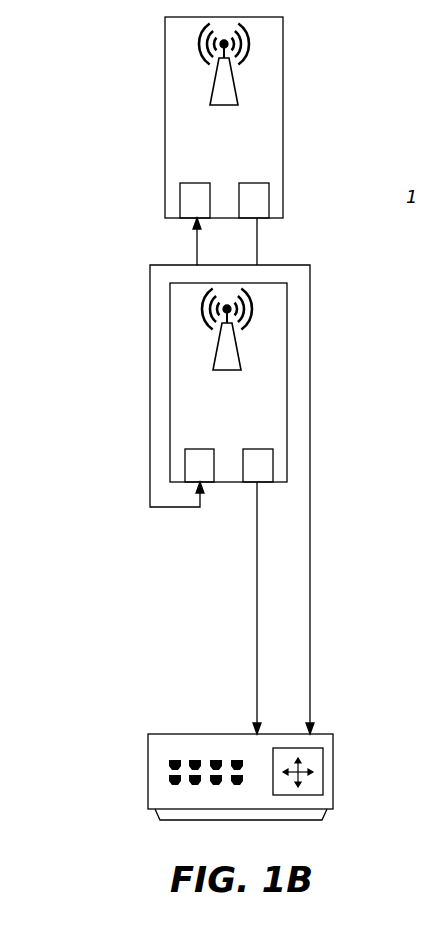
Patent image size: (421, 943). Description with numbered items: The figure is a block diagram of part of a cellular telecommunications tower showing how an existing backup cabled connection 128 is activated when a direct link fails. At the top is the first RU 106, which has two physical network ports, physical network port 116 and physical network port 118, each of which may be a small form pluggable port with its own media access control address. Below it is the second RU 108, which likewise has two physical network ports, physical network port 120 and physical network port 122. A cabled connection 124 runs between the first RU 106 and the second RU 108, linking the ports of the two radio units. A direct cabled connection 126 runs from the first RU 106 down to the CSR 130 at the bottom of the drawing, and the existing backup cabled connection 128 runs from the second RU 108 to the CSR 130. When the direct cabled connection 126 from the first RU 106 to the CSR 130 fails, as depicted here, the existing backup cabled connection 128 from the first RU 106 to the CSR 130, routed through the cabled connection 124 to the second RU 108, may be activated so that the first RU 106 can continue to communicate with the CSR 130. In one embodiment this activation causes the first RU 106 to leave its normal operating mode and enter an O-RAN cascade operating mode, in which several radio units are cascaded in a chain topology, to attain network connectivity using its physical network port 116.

The first RU 106 is at (210, 152).
The second RU 108 is at (215, 414).
The physical network port 116 is at (195, 197).
The physical network port 118 is at (257, 197).
The physical network port 120 is at (204, 476).
The physical network port 122 is at (266, 481).
The cabled connection 124 is at (150, 414).
The direct cabled connection 126 is at (310, 423).
The existing backup cabled connection 128 is at (257, 653).
The CSR 130 is at (148, 768).